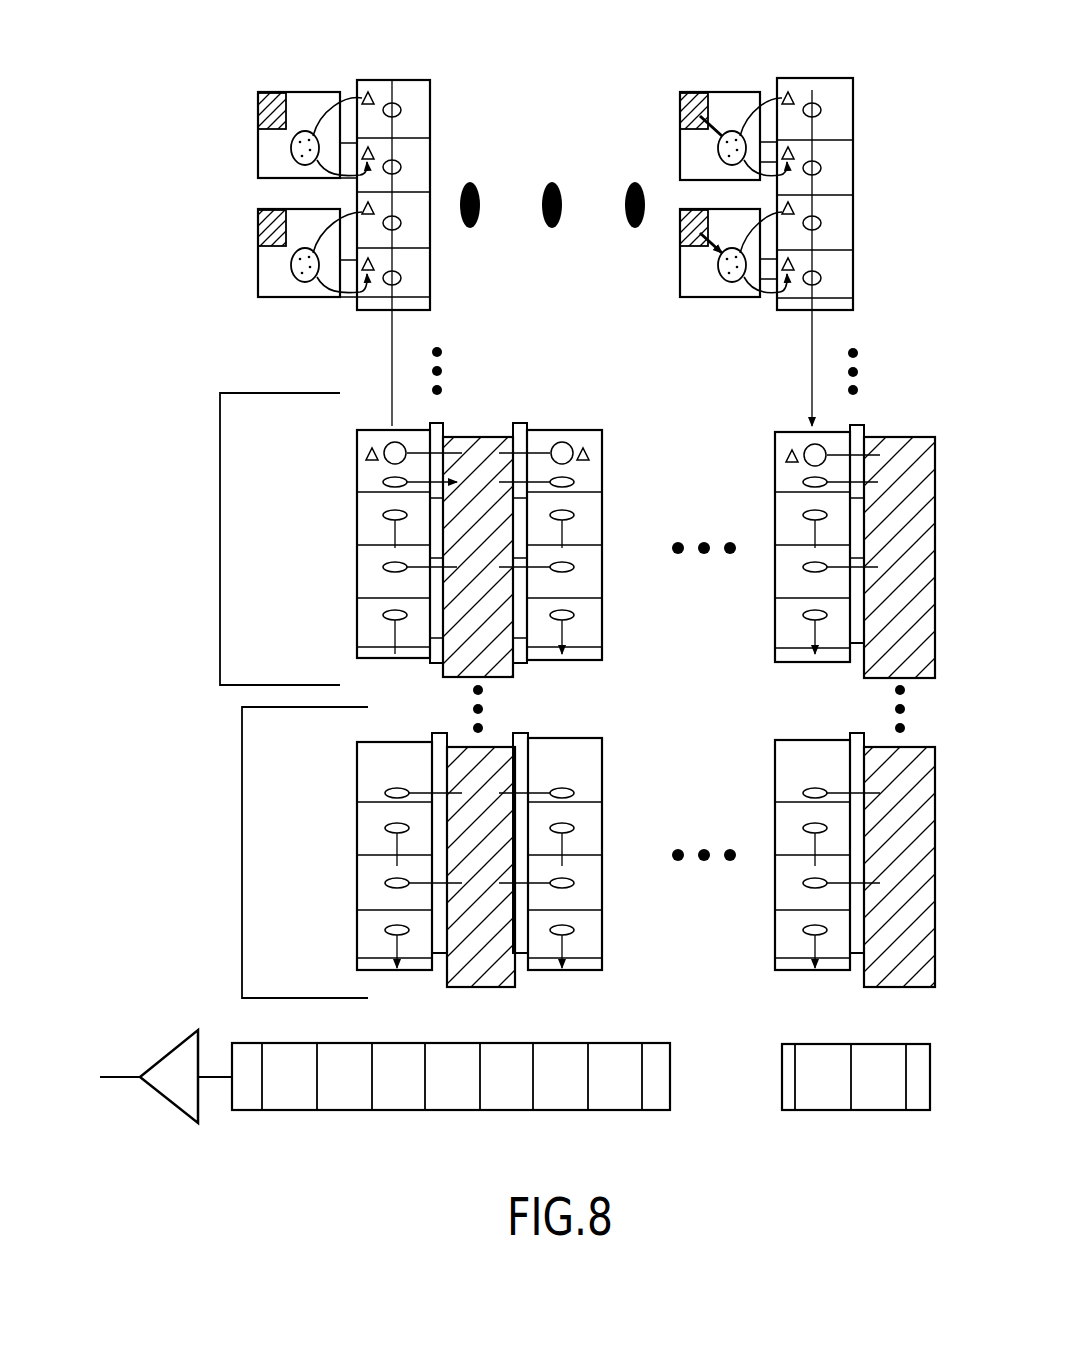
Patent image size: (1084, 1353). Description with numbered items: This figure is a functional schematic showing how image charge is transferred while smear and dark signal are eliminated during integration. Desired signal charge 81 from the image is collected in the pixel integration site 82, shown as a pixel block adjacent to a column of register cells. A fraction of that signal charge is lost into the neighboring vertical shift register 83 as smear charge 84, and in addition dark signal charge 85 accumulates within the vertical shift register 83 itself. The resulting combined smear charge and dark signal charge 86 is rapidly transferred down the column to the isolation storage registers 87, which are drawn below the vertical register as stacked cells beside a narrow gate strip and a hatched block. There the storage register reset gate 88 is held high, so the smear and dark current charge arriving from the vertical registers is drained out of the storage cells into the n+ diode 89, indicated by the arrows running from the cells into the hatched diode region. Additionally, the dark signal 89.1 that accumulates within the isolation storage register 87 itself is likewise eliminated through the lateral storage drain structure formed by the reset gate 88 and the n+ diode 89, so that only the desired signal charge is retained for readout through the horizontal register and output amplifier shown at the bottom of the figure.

The signal charge 81 is at (304, 128).
The pixel integration site 82 is at (257, 152).
The vertical shift register 83 is at (436, 113).
The smear charge 84 is at (360, 86).
The dark signal charge 85 is at (397, 102).
The combined smear charge and dark signal charge 86 is at (366, 451).
The isolation storage register 87 is at (371, 426).
The storage register reset gate 88 is at (446, 420).
The n+ diode 89 is at (484, 430).
The dark signal 89.1 is at (362, 483).